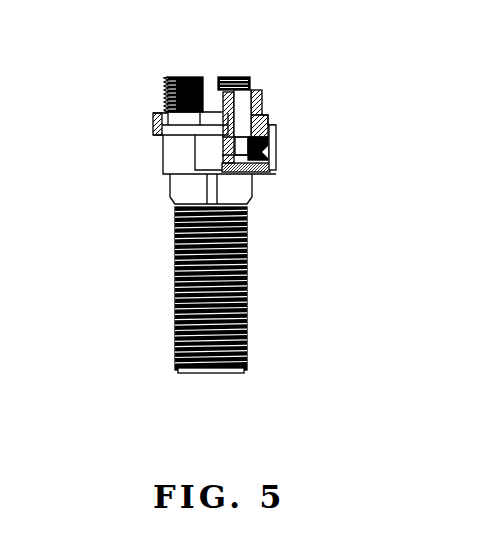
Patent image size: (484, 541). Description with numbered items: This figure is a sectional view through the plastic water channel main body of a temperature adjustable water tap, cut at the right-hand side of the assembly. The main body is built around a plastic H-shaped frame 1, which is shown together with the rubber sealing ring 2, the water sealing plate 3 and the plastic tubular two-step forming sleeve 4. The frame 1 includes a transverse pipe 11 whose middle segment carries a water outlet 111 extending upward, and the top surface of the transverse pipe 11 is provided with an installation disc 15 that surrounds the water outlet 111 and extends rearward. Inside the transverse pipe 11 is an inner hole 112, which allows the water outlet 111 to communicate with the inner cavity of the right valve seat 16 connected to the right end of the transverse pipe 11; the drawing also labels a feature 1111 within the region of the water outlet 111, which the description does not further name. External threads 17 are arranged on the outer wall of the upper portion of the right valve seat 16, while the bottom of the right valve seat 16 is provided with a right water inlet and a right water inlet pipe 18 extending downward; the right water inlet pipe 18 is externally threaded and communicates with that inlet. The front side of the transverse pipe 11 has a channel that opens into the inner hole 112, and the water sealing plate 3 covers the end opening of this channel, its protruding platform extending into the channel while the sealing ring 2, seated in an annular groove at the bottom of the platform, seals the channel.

The plastic H-shaped frame 1 is at (243, 202).
The rubber sealing ring 2 is at (260, 157).
The water sealing plate 3 is at (277, 153).
The plastic tubular two-step forming sleeve 4 is at (279, 134).
The transverse pipe 11 is at (168, 112).
The installation disc 15 is at (153, 127).
The right valve seat 16 is at (187, 167).
The external threads 17 is at (168, 88).
The right water inlet pipe 18 is at (175, 308).
The water outlet 111 is at (256, 110).
The inner hole 112 is at (240, 149).
The pin hole 1111 is at (243, 98).